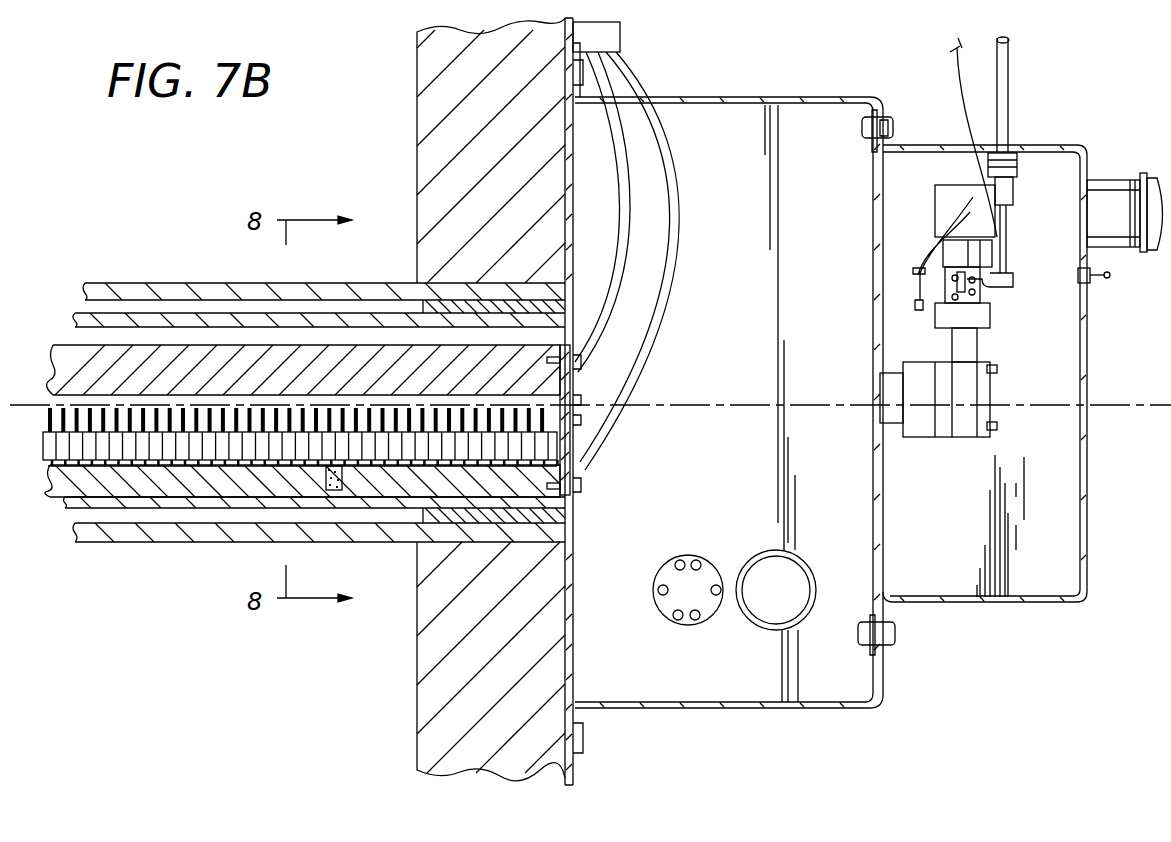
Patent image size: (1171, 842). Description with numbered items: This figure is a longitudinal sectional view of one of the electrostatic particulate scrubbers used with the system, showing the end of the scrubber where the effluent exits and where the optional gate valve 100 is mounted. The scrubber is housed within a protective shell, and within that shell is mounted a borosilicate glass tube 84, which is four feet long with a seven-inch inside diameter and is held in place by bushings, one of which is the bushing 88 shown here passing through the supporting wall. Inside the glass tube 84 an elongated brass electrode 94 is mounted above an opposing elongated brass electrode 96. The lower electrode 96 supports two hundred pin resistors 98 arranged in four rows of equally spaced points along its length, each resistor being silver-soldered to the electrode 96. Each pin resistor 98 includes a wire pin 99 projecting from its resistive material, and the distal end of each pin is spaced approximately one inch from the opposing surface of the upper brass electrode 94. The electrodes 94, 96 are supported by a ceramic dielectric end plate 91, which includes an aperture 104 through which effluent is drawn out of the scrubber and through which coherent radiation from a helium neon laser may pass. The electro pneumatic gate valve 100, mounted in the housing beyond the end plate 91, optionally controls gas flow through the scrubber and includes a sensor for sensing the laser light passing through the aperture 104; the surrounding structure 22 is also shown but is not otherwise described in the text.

The outer tube 22 is at (105, 287).
The borosilicate glass tube 84 is at (178, 318).
The bushing 88 is at (420, 304).
The elongated brass electrode 94 is at (60, 343).
The elongated brass electrode 96 is at (63, 473).
The end plate 91 is at (578, 372).
The pin resistor 98 is at (578, 460).
The wire pin 99 is at (578, 420).
The aperture 104 is at (578, 400).
The electro pneumatic gate valve 100 is at (1040, 338).